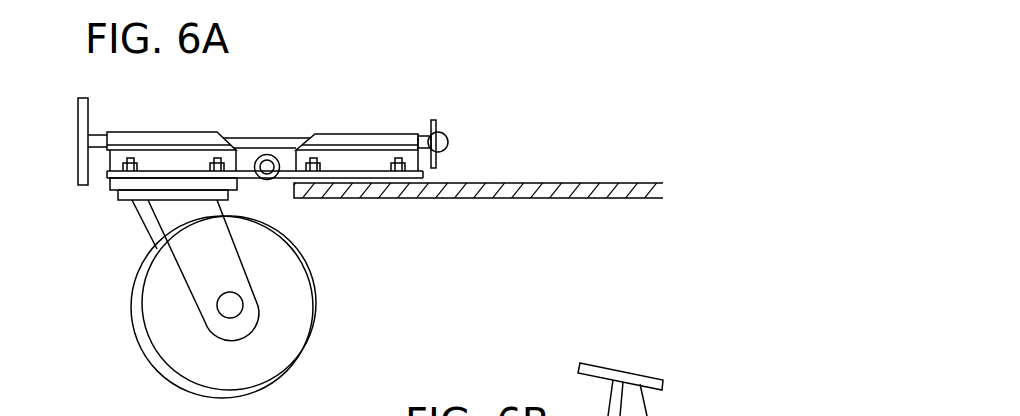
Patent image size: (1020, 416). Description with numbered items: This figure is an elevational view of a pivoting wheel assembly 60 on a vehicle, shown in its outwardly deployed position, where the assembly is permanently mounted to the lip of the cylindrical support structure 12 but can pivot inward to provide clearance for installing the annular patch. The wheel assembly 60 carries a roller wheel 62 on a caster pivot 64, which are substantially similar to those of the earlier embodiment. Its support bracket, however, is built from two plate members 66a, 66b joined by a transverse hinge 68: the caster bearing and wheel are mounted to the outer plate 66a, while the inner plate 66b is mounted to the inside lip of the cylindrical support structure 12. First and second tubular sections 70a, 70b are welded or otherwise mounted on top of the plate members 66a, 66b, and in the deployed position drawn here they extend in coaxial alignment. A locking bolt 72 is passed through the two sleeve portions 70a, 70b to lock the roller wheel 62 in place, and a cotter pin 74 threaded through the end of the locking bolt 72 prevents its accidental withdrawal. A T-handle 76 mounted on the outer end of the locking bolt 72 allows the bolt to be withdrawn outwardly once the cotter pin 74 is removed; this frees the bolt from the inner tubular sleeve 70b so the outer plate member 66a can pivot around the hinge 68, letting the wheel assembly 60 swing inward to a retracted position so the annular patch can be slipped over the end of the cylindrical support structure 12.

The cylindrical support structure 12 is at (468, 190).
The wheel assembly 60 is at (331, 108).
The roller wheel 62 is at (298, 293).
The caster pivot 64 is at (128, 196).
The outer plate member 66a is at (243, 178).
The inner plate member 66b is at (290, 177).
The transverse hinge 68 is at (267, 167).
The first tubular section 70a is at (153, 138).
The second tubular section 70b is at (353, 142).
The locking bolt 72 is at (250, 140).
The cotter pin 74 is at (437, 122).
The T-handle 76 is at (85, 112).